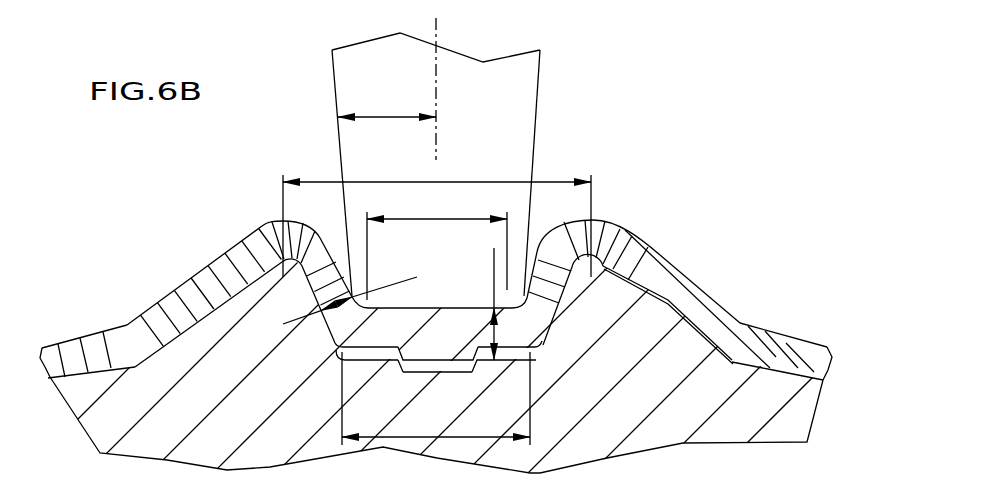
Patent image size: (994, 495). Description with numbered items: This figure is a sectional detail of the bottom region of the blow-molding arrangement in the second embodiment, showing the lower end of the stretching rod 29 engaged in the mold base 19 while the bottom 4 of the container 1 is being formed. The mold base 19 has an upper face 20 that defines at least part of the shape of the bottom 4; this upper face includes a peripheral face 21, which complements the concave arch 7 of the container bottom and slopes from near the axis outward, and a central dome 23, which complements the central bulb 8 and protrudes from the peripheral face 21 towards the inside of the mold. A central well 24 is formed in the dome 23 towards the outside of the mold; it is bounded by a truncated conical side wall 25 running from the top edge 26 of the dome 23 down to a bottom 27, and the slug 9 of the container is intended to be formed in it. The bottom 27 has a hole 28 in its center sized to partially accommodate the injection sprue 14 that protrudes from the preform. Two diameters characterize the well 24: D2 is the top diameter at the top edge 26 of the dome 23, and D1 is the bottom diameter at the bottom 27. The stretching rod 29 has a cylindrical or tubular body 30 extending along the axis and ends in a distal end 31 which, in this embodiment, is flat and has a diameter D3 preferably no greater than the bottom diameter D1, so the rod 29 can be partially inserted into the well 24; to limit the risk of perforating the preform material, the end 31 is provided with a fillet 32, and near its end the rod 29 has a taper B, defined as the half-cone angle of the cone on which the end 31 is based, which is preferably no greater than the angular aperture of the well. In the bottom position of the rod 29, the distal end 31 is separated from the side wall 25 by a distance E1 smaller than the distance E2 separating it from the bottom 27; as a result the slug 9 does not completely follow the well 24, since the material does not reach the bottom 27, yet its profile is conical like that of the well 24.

The container 1 is at (715, 300).
The bottom 4 is at (700, 289).
The concave arch 7 is at (60, 360).
The central bulb 8 is at (177, 288).
The slug 9 is at (548, 308).
The injection sprue 14 is at (412, 364).
The mold base 19 is at (720, 435).
The upper face 20 is at (110, 364).
The peripheral face 21 is at (798, 374).
The central dome 23 is at (648, 292).
The central well 24 is at (322, 355).
The truncated conical side wall 25 is at (313, 298).
The top edge 26 is at (284, 262).
The bottom 27 is at (414, 347).
The hole 28 is at (437, 375).
The stretching rod 29 is at (538, 121).
The cylindrical or tubular body 30 is at (527, 68).
The distal end 31 is at (452, 303).
The fillet 32 is at (522, 312).
The taper B is at (387, 102).
The bottom diameter D1 is at (436, 398).
The top diameter D2 is at (437, 214).
The diameter of the rod end D3 is at (437, 246).
The distance to side wall E1 is at (350, 288).
The distance to well bottom E2 is at (475, 304).